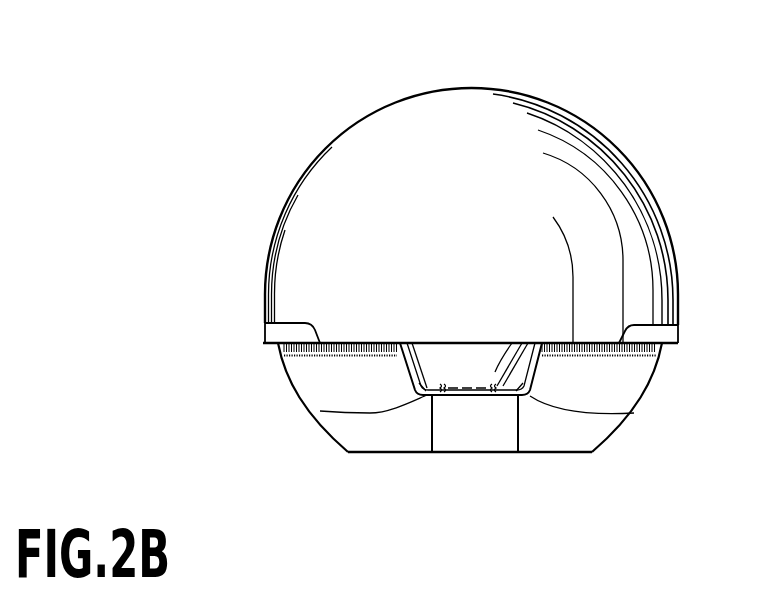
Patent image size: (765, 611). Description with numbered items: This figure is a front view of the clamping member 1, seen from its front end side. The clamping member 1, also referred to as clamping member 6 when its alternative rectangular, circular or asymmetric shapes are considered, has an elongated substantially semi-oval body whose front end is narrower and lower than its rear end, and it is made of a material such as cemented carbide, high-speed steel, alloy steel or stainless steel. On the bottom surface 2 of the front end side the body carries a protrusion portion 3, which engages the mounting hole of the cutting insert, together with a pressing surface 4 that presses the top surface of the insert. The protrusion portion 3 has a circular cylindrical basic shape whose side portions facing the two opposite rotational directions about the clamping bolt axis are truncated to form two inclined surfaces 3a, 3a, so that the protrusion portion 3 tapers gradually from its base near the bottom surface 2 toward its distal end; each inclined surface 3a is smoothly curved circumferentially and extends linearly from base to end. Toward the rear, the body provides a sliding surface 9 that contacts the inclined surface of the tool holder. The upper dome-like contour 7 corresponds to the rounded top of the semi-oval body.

The clamping member 1 is at (625, 438).
The bottom surface 2 is at (278, 353).
The protrusion portion 3 is at (460, 412).
The inclined surface 3a is at (320, 411).
The pressing surface 4 is at (397, 345).
The clamping member 6 is at (268, 243).
The transparent dome 7 is at (450, 88).
The sliding surface 9 is at (570, 428).